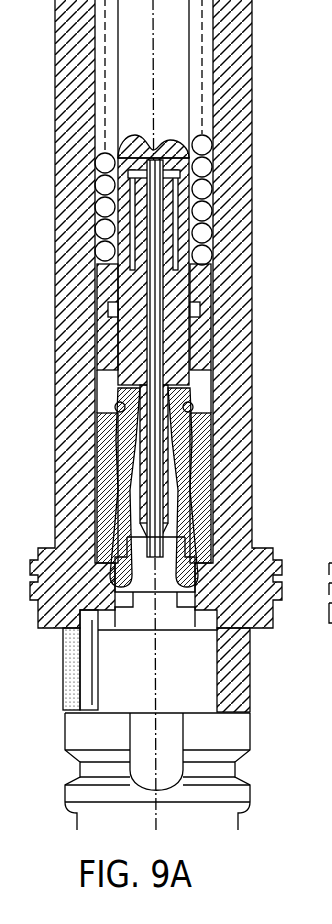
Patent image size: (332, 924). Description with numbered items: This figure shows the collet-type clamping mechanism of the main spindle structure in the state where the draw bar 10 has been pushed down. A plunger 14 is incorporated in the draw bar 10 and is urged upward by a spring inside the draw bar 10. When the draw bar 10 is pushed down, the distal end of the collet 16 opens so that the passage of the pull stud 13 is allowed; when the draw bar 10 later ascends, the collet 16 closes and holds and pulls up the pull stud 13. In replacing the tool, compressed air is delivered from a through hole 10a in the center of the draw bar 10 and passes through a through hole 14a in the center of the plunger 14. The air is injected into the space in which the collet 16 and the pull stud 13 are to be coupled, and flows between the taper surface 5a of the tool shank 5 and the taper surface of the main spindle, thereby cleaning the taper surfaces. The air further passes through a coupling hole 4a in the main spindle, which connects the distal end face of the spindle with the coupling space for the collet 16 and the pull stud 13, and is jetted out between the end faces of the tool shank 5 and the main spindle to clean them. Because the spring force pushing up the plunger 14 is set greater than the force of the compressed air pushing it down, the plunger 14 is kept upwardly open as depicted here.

The draw bar 10 is at (172, 93).
The through hole 10a is at (158, 147).
The plunger 14 is at (165, 218).
The through hole 14a is at (152, 198).
The collet 16 is at (197, 530).
The pull stud 13 is at (128, 616).
The coupling hole 4a is at (85, 693).
The taper surface 5a is at (198, 683).
The tool shank 5 is at (212, 827).